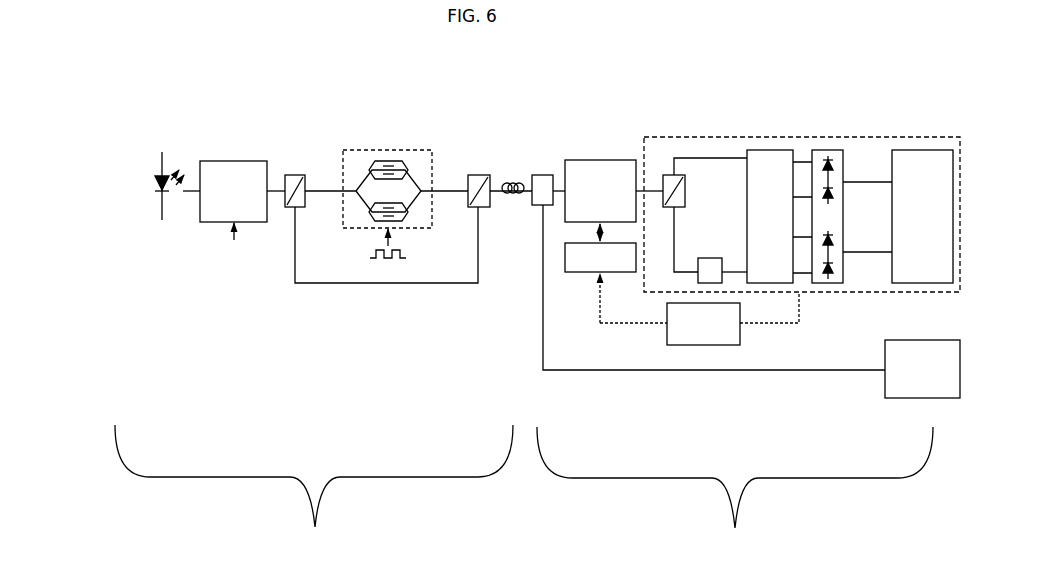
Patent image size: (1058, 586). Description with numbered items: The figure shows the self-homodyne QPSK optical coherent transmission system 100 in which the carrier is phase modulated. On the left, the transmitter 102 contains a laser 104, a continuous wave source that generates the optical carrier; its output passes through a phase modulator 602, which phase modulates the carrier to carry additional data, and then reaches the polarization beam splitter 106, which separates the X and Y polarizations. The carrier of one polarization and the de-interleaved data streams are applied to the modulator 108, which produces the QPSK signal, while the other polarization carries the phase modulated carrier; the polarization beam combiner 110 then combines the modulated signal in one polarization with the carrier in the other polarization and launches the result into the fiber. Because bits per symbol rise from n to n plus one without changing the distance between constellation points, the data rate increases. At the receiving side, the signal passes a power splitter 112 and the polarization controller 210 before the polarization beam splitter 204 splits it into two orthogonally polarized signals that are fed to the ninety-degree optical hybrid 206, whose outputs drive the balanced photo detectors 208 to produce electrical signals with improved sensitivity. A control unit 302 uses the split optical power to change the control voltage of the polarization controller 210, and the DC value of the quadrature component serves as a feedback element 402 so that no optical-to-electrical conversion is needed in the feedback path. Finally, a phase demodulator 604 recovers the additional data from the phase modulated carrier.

The self-homodyne optical coherent transmission system 100 is at (145, 115).
The transmitter 102 is at (314, 491).
The laser 104 is at (175, 262).
The polarization beam splitter 106 is at (296, 176).
The modulator 108 is at (381, 150).
The polarization beam combiner 110 is at (478, 176).
The polarization scrambler 112 is at (512, 186).
The polarization beam splitter 204 is at (664, 180).
The 90° optical hybrid 206 is at (765, 148).
The balanced photo detectors 208 is at (822, 148).
The polarization controller 210 is at (590, 160).
The control unit 302 is at (575, 272).
The feedback element 402 is at (690, 345).
The phase modulator 602 is at (212, 161).
The phase demodulator 604 is at (905, 398).